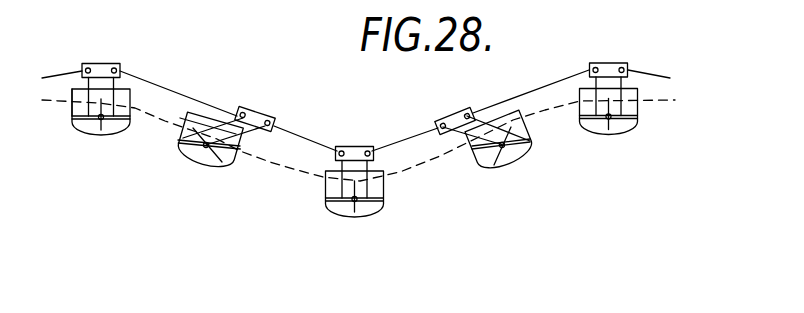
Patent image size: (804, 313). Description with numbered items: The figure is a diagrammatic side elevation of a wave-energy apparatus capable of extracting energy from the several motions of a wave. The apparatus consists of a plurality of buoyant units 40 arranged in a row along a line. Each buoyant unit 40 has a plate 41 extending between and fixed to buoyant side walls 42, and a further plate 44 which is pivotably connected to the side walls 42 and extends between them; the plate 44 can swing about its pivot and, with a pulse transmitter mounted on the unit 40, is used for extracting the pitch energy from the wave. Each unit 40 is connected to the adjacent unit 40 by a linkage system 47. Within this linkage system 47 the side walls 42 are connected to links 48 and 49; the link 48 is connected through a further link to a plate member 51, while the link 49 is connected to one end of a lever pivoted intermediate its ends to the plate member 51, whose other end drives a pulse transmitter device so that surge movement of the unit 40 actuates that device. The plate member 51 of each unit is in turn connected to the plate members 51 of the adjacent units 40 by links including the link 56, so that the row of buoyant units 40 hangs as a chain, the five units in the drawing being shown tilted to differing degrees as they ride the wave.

The buoyant unit 40 is at (103, 140).
The plate 41 is at (126, 133).
The buoyant side wall 42 is at (94, 136).
The plate 44 is at (104, 130).
The linkage system 47 is at (122, 63).
The link 48 is at (76, 98).
The link 49 is at (130, 100).
The plate member 51 is at (100, 65).
The link 56 is at (190, 108).